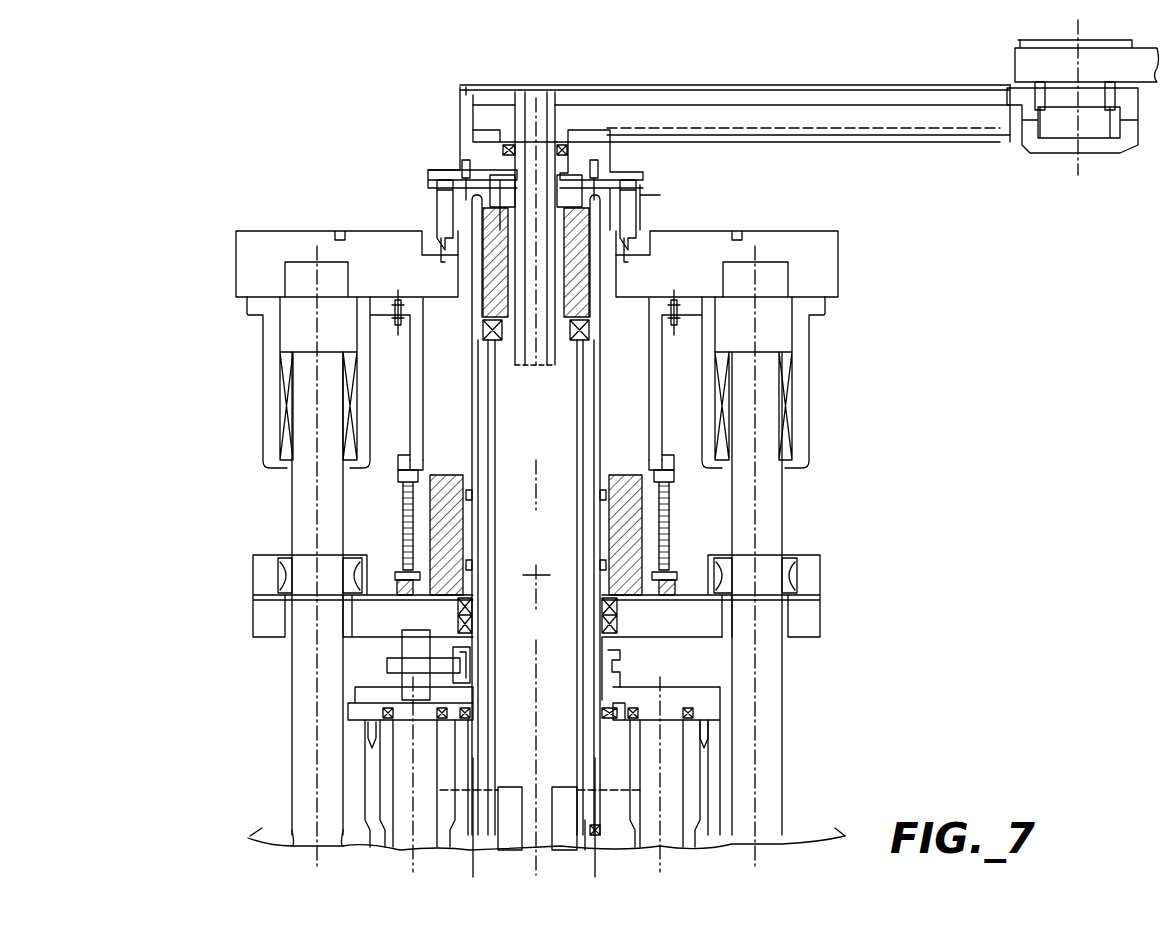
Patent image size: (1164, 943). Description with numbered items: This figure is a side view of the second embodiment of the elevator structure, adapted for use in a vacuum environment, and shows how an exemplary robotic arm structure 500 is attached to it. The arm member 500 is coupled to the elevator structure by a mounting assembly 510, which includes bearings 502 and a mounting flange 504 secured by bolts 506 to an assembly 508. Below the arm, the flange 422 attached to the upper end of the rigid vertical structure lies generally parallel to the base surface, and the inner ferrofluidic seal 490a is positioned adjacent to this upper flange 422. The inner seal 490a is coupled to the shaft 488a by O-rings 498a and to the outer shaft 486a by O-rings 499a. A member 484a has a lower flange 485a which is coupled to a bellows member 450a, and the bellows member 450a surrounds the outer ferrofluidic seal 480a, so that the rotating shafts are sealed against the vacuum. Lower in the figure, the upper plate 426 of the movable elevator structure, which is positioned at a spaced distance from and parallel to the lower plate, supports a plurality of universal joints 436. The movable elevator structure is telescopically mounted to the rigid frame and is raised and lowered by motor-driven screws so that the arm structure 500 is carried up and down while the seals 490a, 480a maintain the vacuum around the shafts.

The robotic arm structure 500 is at (600, 78).
The bearings 502 is at (575, 143).
The mounting flange 504 is at (645, 178).
The bolts 506 is at (475, 133).
The assembly 508 is at (470, 182).
The mounting assembly 510 is at (650, 192).
The O-rings 499a is at (483, 223).
The shaft 488a is at (602, 206).
The flange 422 is at (248, 248).
The inner ferrofluidic seal 490a is at (483, 272).
The O-rings 498a is at (472, 345).
The outer ferrofluidic seal 480a is at (440, 523).
The bellows member 450a is at (645, 520).
The upper plate 426 is at (262, 612).
The member 484a is at (657, 352).
The outer shaft 486a is at (595, 392).
The lower flange 485a is at (658, 472).
The universal joints 436 is at (800, 586).